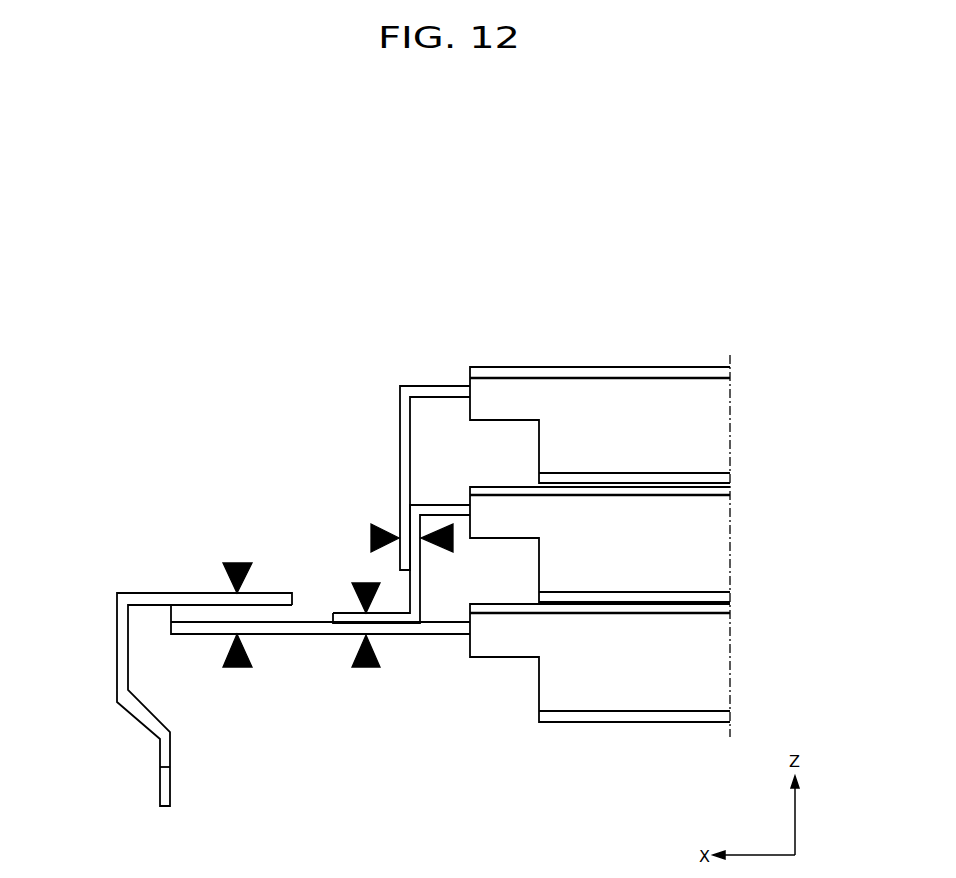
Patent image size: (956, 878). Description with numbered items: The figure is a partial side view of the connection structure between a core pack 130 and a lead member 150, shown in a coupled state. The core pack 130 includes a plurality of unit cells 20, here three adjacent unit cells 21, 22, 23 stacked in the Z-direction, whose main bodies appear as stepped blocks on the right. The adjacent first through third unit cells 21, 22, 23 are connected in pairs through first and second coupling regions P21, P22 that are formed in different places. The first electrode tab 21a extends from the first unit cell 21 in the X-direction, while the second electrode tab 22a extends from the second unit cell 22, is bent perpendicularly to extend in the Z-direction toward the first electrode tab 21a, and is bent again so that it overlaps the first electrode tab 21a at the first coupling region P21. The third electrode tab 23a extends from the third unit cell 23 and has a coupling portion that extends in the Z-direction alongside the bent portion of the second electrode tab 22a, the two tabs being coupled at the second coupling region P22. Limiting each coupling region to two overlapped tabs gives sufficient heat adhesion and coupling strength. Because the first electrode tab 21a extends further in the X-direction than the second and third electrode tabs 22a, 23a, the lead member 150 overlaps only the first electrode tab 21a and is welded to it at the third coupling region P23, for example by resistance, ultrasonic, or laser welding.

The core pack 130 is at (683, 290).
The lead member 150 is at (122, 580).
The unit cells 20 is at (790, 420).
The first unit cell 21 is at (714, 660).
The second unit cell 22 is at (714, 546).
The third unit cell 23 is at (714, 427).
The first electrode tab 21a is at (417, 636).
The second electrode tab 22a is at (436, 505).
The third electrode tab 23a is at (417, 386).
The first coupling region P21 is at (360, 637).
The second coupling region P22 is at (390, 527).
The third coupling region P23 is at (224, 594).